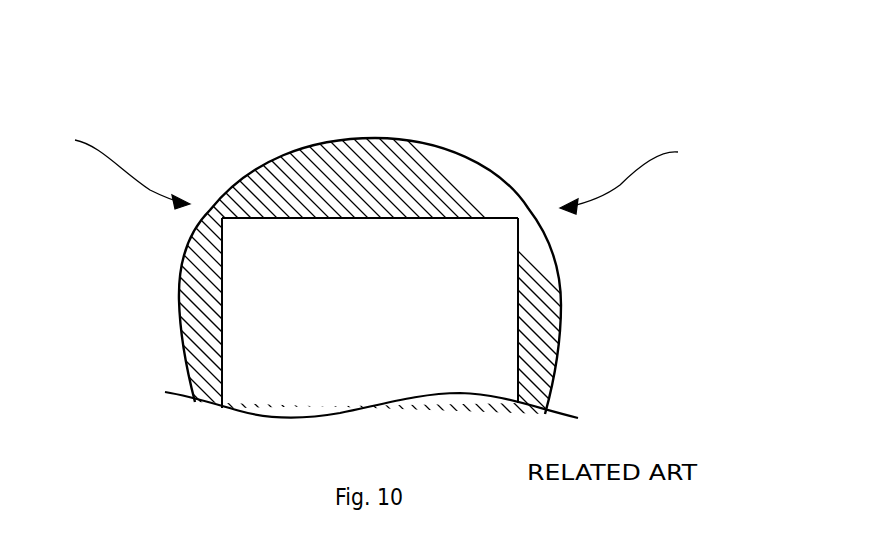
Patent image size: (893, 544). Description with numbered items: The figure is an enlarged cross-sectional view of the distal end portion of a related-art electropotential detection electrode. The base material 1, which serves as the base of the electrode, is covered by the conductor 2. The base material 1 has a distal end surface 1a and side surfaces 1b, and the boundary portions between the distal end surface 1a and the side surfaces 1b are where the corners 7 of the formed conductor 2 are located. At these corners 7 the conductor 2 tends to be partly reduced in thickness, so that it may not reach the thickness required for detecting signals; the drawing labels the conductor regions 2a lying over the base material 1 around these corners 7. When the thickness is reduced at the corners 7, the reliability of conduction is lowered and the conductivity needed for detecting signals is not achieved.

The base material 1 is at (420, 351).
The distal end surface 1a is at (415, 217).
The side surfaces 1b is at (222, 313).
The conductor 2 is at (487, 162).
The hatched wall portion of cap 2a is at (307, 185).
The corners 7 is at (376, 167).